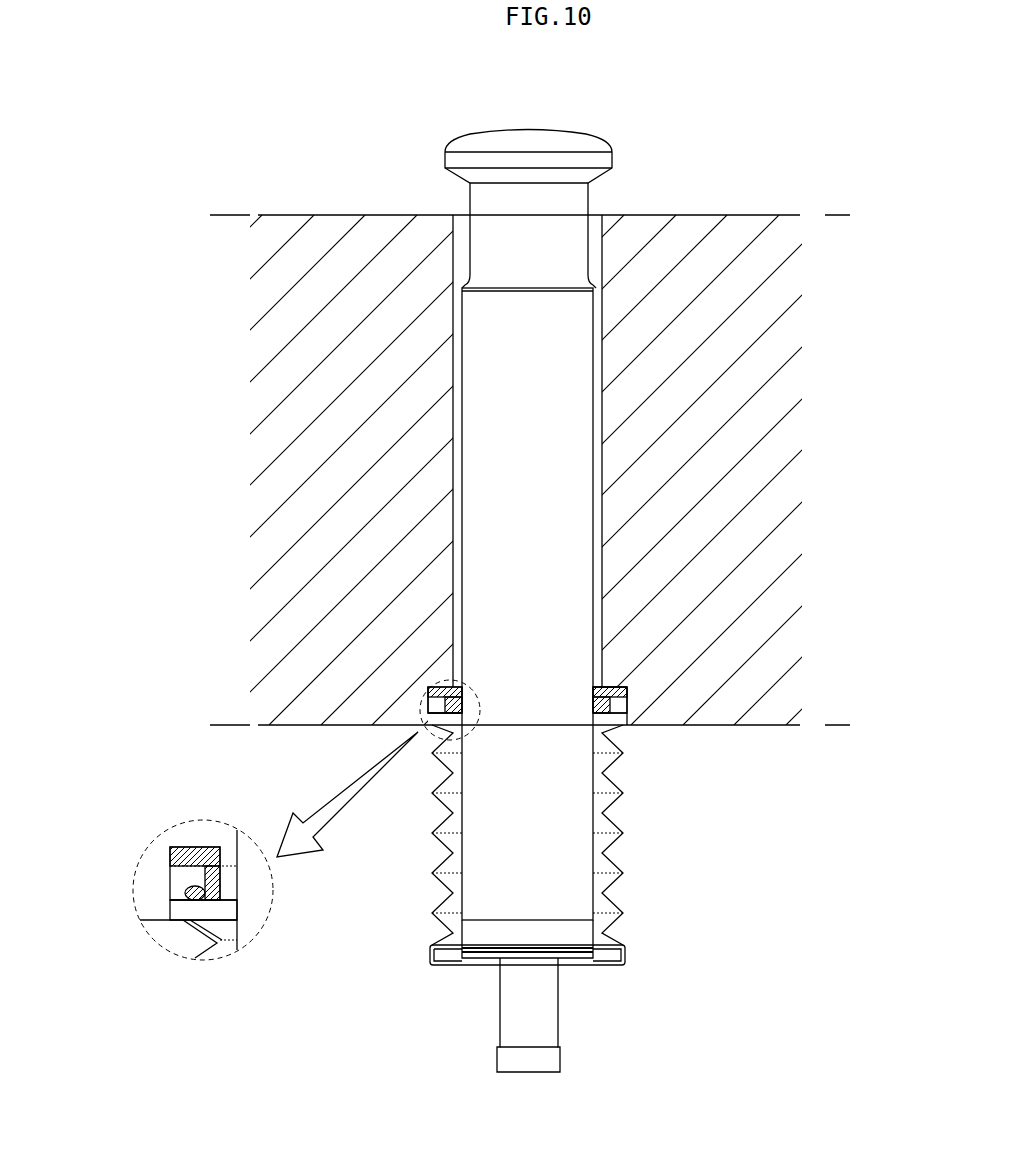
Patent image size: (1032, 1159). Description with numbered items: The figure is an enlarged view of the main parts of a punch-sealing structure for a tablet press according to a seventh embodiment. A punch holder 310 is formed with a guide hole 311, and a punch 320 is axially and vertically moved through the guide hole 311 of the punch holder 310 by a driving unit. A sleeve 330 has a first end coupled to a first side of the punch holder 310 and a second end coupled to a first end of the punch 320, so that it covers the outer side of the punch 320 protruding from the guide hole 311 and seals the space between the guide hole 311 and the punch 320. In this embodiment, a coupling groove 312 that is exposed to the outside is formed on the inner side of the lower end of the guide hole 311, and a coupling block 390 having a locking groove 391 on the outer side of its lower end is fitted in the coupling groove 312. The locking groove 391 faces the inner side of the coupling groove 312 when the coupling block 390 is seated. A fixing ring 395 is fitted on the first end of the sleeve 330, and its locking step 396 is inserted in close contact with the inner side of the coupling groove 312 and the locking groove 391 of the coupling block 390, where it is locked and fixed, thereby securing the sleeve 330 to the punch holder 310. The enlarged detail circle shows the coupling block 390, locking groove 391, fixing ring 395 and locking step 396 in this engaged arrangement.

The punch holder 310 is at (340, 225).
The guide hole 311 is at (590, 237).
The punch 320 is at (573, 418).
The coupling groove 312 is at (597, 692).
The coupling block 390 is at (633, 685).
The locking groove 391 is at (203, 870).
The fixing ring 395 is at (617, 720).
The locking step 396 is at (188, 877).
The sleeve 330 is at (620, 830).